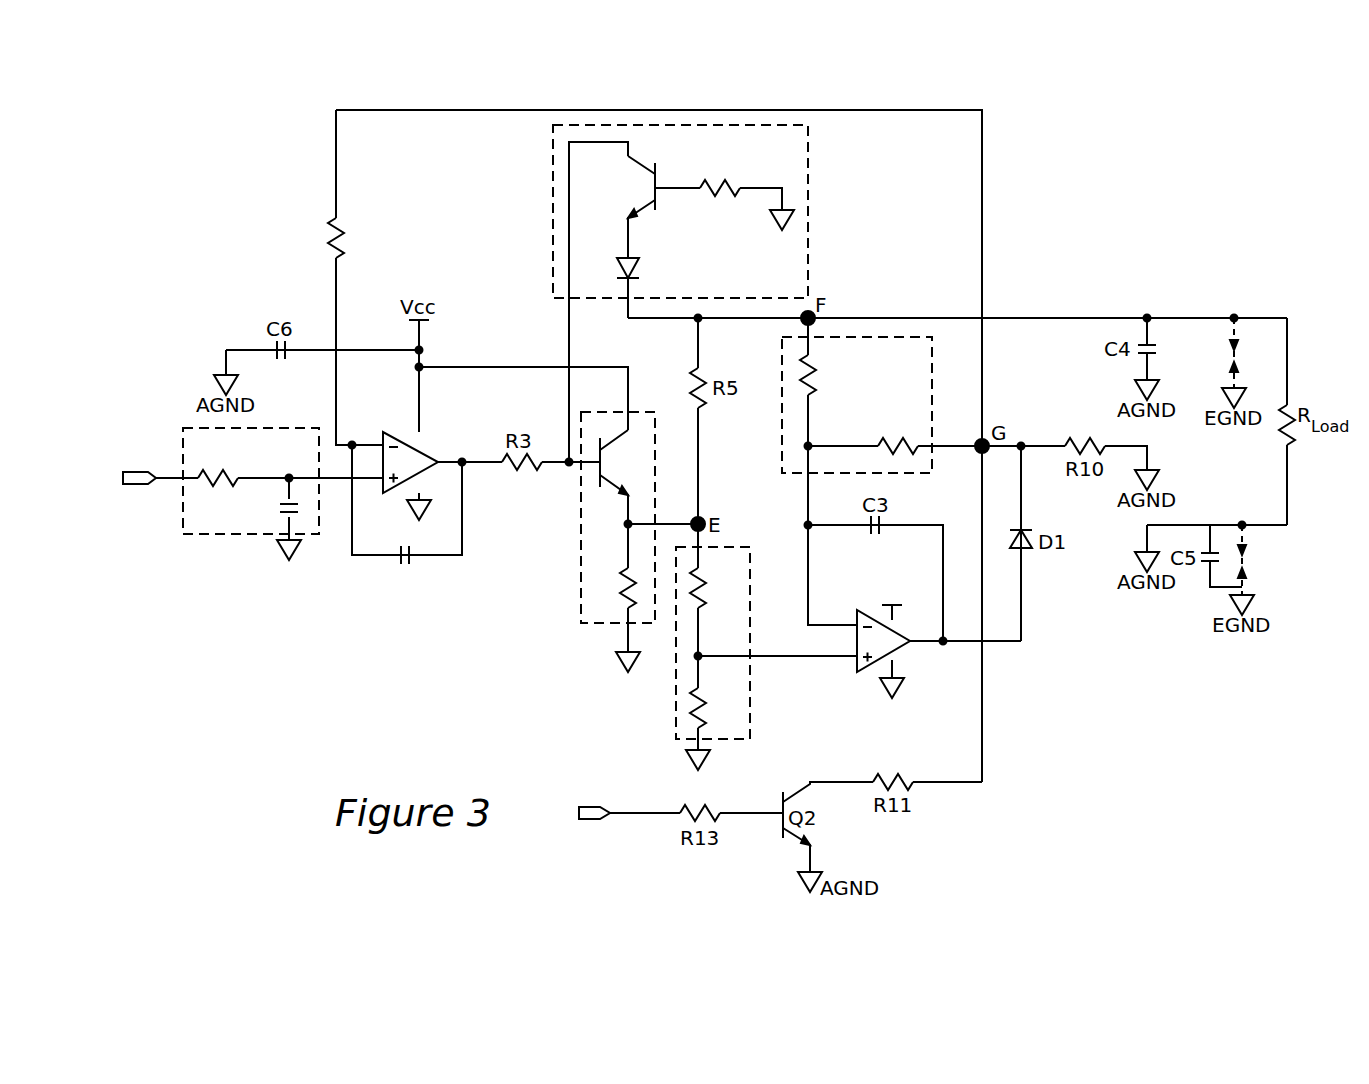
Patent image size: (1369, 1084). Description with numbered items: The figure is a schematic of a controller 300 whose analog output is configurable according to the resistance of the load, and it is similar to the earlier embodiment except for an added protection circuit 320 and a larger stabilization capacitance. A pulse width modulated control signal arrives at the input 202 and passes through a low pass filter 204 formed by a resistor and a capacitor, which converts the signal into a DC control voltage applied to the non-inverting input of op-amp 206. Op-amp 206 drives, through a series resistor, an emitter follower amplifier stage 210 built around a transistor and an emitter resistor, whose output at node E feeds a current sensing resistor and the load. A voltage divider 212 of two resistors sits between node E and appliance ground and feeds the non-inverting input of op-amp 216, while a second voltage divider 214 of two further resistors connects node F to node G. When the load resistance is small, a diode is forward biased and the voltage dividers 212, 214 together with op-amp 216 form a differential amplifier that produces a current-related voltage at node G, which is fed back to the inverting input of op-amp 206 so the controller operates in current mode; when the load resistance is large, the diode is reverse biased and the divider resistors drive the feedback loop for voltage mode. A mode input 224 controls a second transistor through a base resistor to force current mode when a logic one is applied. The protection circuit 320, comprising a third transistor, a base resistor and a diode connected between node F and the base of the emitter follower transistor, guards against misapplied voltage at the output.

The controller 300 is at (1089, 203).
The protection circuit 320 is at (808, 176).
The input 202 is at (146, 485).
The low pass filter 204 is at (219, 536).
The op-amp 206 is at (423, 455).
The amplifier stage 210 is at (581, 544).
The voltage divider 212 is at (676, 713).
The second voltage divider 214 is at (782, 441).
The op-amp 216 is at (902, 651).
The mode input 224 is at (591, 821).